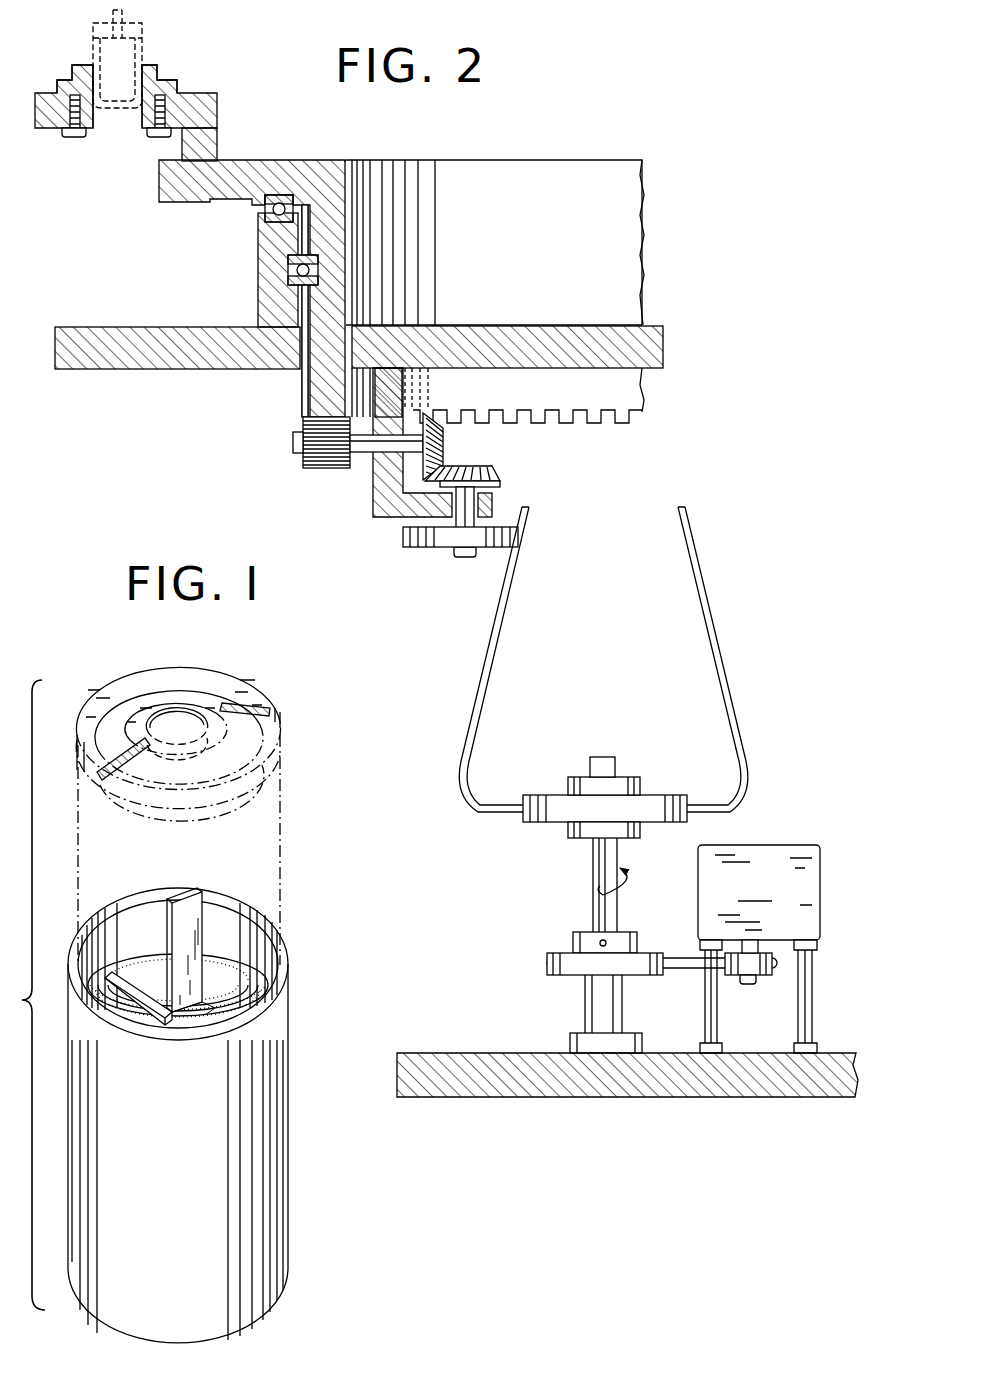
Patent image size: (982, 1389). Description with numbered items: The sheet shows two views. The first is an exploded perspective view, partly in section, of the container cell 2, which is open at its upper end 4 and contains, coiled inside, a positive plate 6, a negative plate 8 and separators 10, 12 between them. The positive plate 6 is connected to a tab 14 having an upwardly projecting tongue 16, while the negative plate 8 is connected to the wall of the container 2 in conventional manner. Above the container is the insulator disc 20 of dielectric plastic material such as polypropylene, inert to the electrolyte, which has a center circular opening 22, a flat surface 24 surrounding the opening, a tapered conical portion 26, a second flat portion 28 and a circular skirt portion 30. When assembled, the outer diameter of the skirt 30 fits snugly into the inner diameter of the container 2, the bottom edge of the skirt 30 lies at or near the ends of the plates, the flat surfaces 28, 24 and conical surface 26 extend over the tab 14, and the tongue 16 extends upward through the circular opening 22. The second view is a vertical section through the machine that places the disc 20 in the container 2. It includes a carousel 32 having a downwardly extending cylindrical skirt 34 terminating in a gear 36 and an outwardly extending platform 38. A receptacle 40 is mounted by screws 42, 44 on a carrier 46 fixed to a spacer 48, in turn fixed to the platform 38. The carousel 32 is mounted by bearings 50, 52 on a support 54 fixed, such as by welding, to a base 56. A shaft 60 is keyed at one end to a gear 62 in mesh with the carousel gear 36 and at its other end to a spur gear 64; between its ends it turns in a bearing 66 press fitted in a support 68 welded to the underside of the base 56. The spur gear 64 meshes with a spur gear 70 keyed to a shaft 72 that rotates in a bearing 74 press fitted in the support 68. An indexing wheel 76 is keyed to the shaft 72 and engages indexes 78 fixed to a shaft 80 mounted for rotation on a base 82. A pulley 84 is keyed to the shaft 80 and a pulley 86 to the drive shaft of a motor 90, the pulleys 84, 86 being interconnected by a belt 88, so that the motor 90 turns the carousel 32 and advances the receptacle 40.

In FIG. 2, the container cell 2 is at (92, 48).
In FIG. 1, the container cell 2 is at (292, 955).
In FIG. 1, the upper end 4 is at (146, 915).
In FIG. 1, the positive plate 6 is at (122, 1010).
In FIG. 1, the negative plate 8 is at (102, 1012).
In FIG. 1, the separator 10 is at (113, 1010).
In FIG. 1, the separator 12 is at (130, 1008).
In FIG. 1, the tab 14 is at (192, 1010).
In FIG. 1, the tongue 16 is at (190, 906).
In FIG. 1, the insulator disc 20 is at (278, 692).
In FIG. 1, the center circular opening 22 is at (174, 715).
In FIG. 1, the flat surface 24 is at (200, 695).
In FIG. 1, the tapered conical portion 26 is at (140, 695).
In FIG. 1, the second flat portion 28 is at (93, 698).
In FIG. 1, the circular skirt portion 30 is at (97, 780).
In FIG. 2, the carousel 32 is at (346, 158).
In FIG. 2, the cylindrical skirt 34 is at (560, 175).
In FIG. 2, the gear 36 is at (644, 412).
In FIG. 2, the platform 38 is at (296, 170).
In FIG. 2, the receptacle 40 is at (148, 80).
In FIG. 2, the screw 42 is at (75, 135).
In FIG. 2, the screw 44 is at (159, 135).
In FIG. 2, the carrier 46 is at (206, 106).
In FIG. 2, the spacer 48 is at (203, 147).
In FIG. 2, the bearing 50 is at (266, 216).
In FIG. 2, the bearing 52 is at (290, 278).
In FIG. 2, the support 54 is at (262, 256).
In FIG. 2, the base 56 is at (98, 340).
In FIG. 2, the shaft 60 is at (366, 452).
In FIG. 2, the gear 62 is at (313, 467).
In FIG. 2, the spur gear 64 is at (446, 441).
In FIG. 2, the bearing 66 is at (405, 420).
In FIG. 2, the support 68 is at (385, 512).
In FIG. 2, the spur gear 70 is at (492, 474).
In FIG. 2, the shaft 72 is at (465, 558).
In FIG. 2, the bearing 74 is at (493, 507).
In FIG. 2, the indexing wheel 76 is at (441, 548).
In FIG. 2, the indexes 78 is at (482, 681).
In FIG. 2, the shaft 80 is at (596, 874).
In FIG. 2, the base 82 is at (452, 1065).
In FIG. 2, the pulley 84 is at (552, 957).
In FIG. 2, the pulley 86 is at (761, 985).
In FIG. 2, the belt 88 is at (683, 970).
In FIG. 2, the motor 90 is at (759, 949).